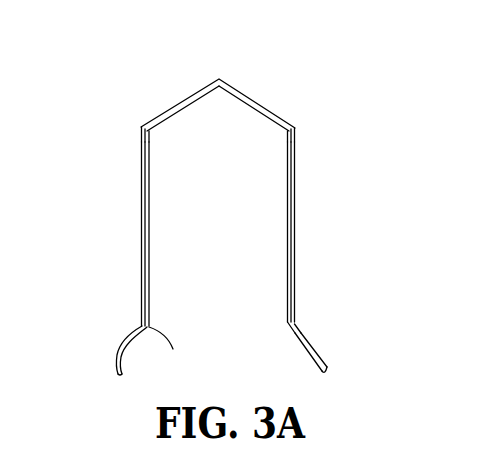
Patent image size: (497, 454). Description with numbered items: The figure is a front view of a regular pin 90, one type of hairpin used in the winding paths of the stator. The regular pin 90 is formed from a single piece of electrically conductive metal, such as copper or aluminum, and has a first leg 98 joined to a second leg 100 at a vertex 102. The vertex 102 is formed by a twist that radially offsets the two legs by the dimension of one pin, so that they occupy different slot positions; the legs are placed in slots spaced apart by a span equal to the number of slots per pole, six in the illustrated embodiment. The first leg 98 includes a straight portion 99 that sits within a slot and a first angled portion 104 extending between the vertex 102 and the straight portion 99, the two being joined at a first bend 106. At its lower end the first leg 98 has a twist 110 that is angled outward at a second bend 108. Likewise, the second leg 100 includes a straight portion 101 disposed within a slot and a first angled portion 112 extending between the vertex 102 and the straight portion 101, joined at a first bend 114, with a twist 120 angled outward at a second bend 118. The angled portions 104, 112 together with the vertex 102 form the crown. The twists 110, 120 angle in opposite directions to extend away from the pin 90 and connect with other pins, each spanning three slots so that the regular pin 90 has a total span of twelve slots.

The regular pin 90 is at (128, 47).
The first leg 98 is at (309, 123).
The straight portion 99 is at (297, 178).
The second leg 100 is at (140, 225).
The straight portion 101 is at (149, 262).
The vertex 102 is at (219, 78).
The first angled portion 104 is at (244, 95).
The first bend 106 is at (286, 131).
The second bend 108 is at (293, 322).
The twist 110 is at (306, 338).
The first angled portion 112 is at (175, 107).
The first bend 114 is at (148, 132).
The second bend 118 is at (165, 337).
The twist 120 is at (130, 337).